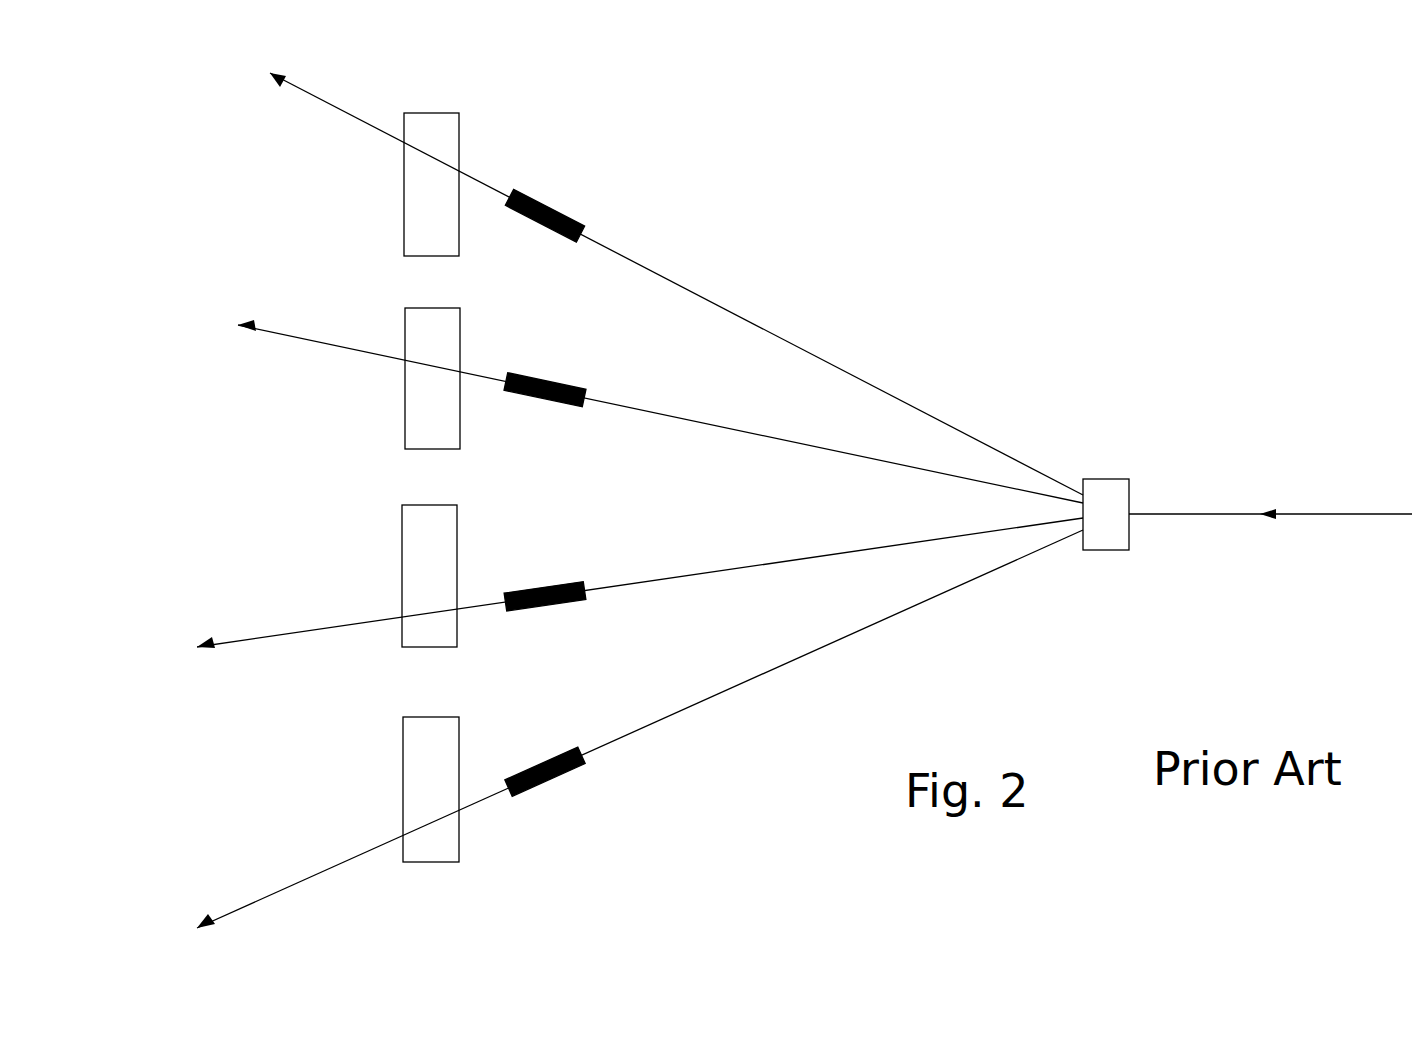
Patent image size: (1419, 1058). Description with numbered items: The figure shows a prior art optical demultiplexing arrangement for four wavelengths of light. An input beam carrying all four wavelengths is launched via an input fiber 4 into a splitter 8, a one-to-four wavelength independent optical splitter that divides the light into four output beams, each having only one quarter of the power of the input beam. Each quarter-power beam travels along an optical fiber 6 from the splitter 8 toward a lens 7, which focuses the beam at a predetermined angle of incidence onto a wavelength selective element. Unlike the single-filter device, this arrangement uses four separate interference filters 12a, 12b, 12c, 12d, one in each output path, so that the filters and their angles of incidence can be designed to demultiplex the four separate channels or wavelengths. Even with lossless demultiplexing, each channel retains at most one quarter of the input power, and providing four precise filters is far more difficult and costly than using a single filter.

The input fiber 4 is at (1250, 514).
The optical fiber 6 is at (958, 430).
The lens 7 is at (553, 203).
The splitter 8 is at (1105, 479).
The interference filter 12a is at (404, 211).
The interference filter 12b is at (405, 402).
The interference filter 12c is at (402, 586).
The interference filter 12d is at (403, 788).